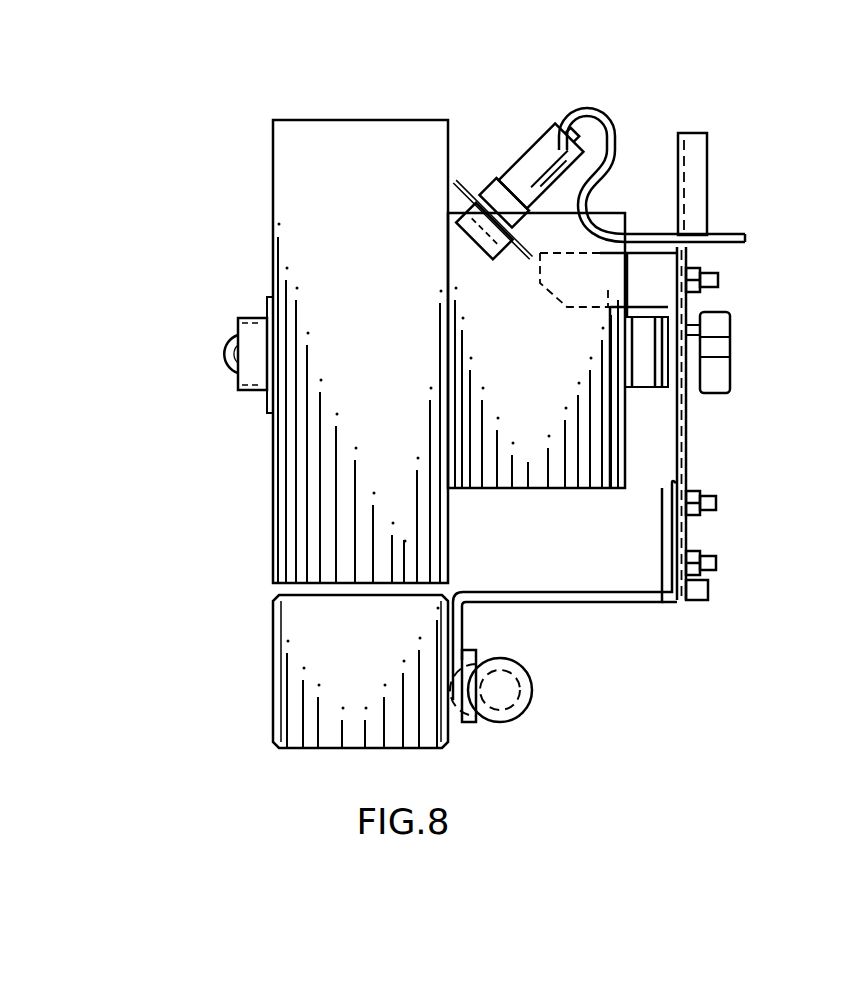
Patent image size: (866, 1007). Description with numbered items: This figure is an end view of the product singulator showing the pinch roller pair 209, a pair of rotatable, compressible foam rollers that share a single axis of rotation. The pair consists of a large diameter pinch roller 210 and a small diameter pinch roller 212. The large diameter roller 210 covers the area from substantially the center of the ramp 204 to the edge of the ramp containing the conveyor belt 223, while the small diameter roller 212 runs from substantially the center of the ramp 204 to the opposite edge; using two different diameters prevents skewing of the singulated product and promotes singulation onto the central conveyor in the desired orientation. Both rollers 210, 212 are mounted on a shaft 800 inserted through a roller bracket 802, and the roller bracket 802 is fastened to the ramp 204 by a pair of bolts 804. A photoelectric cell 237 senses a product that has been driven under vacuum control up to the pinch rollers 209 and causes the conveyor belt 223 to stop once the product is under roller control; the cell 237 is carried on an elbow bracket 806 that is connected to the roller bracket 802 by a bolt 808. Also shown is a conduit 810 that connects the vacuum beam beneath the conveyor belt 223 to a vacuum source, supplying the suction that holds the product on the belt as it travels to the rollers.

The ramp 204 is at (614, 605).
The pinch rollers 209 is at (478, 124).
The large diameter pinch roller 210 is at (287, 152).
The small diameter pinch roller 212 is at (487, 367).
The conveyor belt 223 is at (315, 662).
The photoelectric cell 237 is at (540, 150).
The shaft 800 is at (218, 350).
The roller bracket 802 is at (688, 455).
The bolts 804 is at (718, 503).
The elbow bracket 806 is at (600, 236).
The bolt 808 is at (720, 287).
The conduit 810 is at (531, 699).